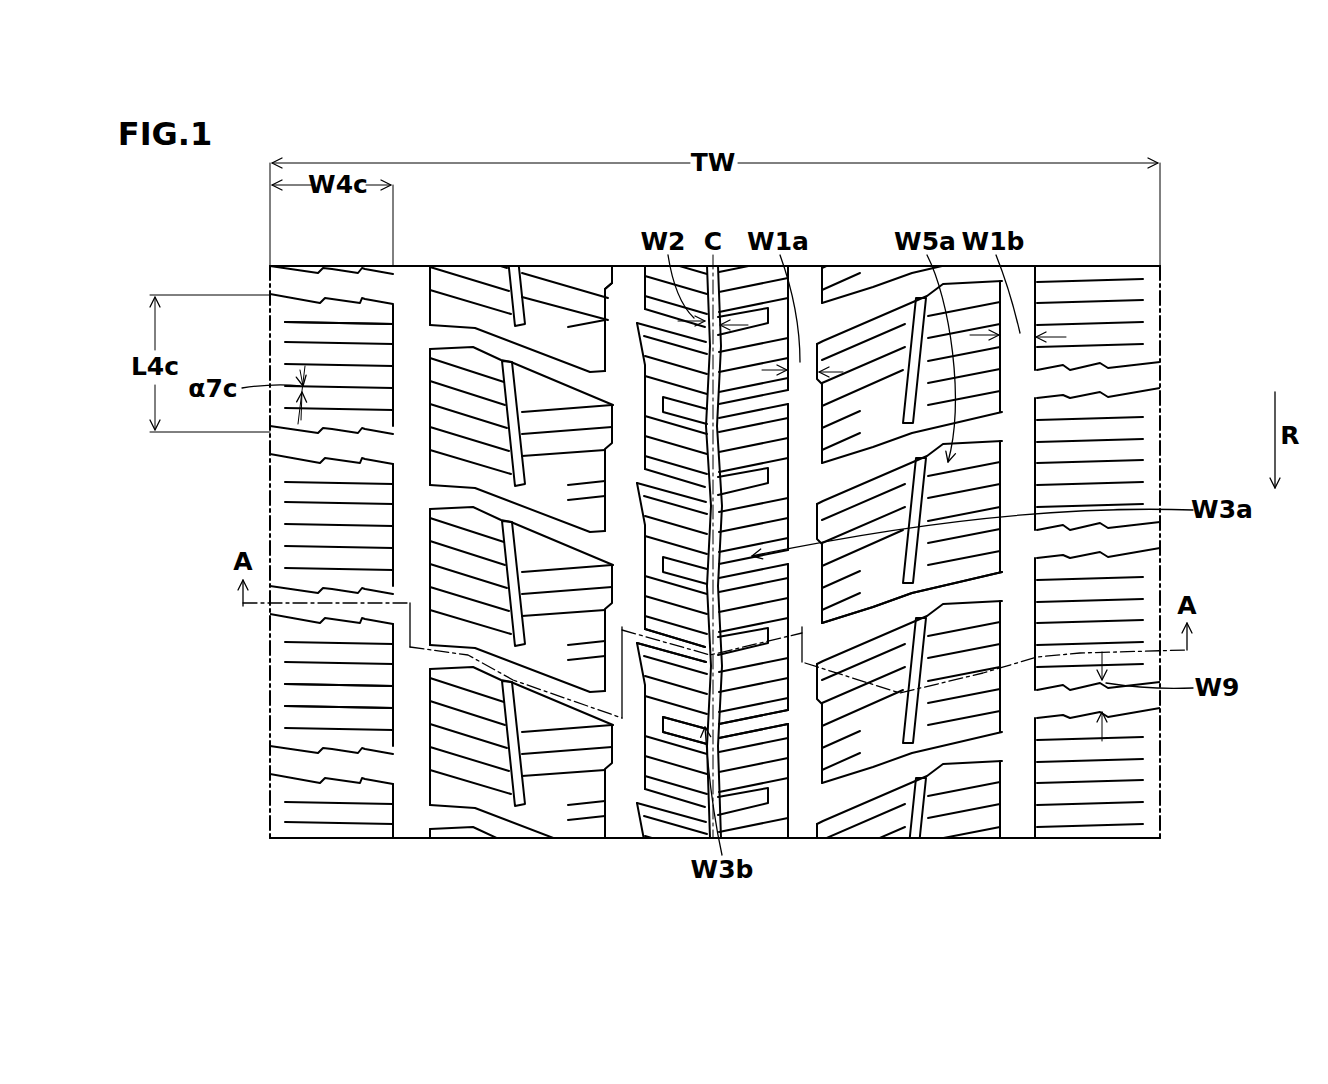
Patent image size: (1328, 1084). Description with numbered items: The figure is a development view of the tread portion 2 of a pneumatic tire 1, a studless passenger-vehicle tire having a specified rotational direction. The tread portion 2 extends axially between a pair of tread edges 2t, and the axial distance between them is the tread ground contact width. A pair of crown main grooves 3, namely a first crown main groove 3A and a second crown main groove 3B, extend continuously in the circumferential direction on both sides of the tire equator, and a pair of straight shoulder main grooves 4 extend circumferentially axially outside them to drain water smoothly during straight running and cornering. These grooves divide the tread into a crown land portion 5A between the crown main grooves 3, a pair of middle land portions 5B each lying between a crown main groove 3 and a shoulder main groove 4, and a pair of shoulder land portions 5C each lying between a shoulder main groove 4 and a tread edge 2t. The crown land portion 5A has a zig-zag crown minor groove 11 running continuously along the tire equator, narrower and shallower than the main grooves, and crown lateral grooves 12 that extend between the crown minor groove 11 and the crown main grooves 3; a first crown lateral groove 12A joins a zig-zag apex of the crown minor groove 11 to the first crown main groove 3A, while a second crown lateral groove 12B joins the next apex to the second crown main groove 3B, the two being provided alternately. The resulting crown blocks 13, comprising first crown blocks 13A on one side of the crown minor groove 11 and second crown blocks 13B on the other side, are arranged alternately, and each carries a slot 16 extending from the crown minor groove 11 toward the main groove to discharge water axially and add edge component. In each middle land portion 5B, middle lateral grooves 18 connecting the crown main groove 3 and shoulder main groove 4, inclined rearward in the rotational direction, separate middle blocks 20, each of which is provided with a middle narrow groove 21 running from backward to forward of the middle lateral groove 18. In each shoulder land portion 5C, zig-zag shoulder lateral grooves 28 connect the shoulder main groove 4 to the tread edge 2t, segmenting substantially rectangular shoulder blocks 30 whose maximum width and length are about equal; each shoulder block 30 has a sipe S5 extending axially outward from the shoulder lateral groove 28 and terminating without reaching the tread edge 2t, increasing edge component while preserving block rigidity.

The pneumatic tire 1 is at (1175, 238).
The tread portion 2 is at (1112, 317).
The tread edge 2t is at (268, 806).
The crown main groove 3 is at (721, 518).
The first crown main groove 3A is at (806, 303).
The second crown main groove 3B is at (627, 308).
The shoulder main groove 4 is at (408, 306).
The crown land portion 5A is at (928, 551).
The middle land portion 5B is at (716, 566).
The shoulder land portion 5C is at (735, 544).
The crown minor groove 11 is at (706, 304).
The crown lateral groove 12 is at (928, 723).
The first crown lateral groove 12A is at (878, 603).
The second crown lateral groove 12B is at (667, 652).
The crown block 13 is at (742, 801).
The first crown block 13A is at (752, 690).
The second crown block 13B is at (677, 765).
The slot 16 is at (745, 792).
The middle lateral groove 18 is at (462, 493).
The middle block 20 is at (462, 332).
The middle narrow groove 21 is at (518, 778).
The shoulder lateral groove 28 is at (318, 456).
The shoulder block 30 is at (318, 360).
The sipe S5 is at (320, 324).